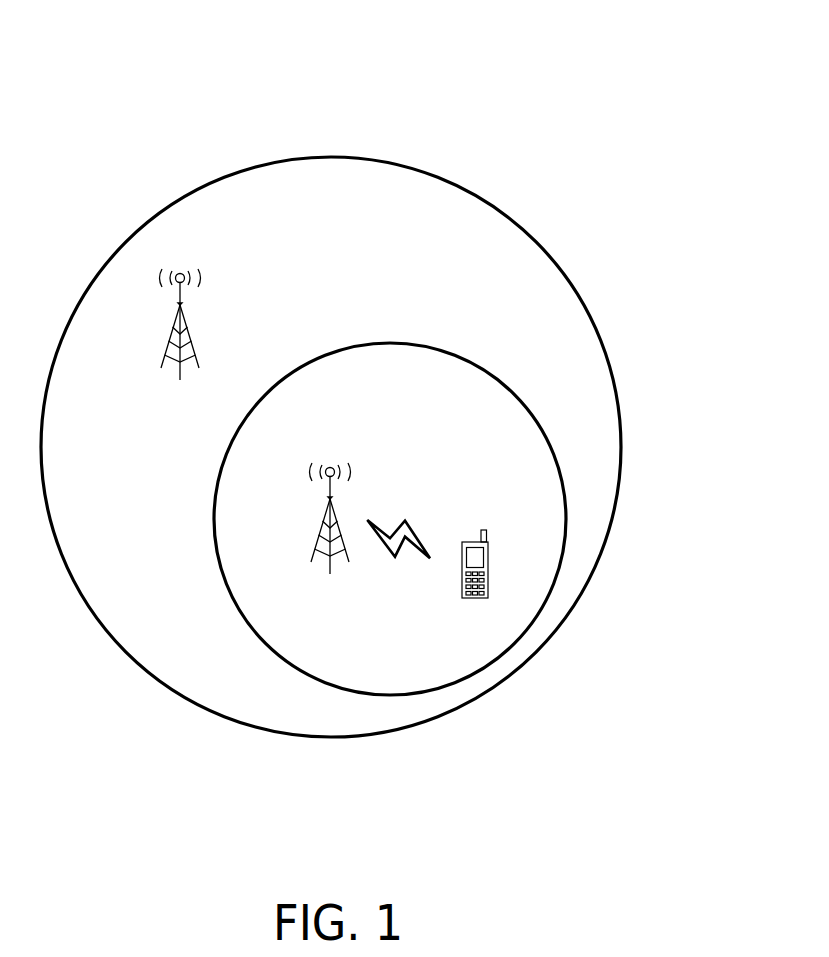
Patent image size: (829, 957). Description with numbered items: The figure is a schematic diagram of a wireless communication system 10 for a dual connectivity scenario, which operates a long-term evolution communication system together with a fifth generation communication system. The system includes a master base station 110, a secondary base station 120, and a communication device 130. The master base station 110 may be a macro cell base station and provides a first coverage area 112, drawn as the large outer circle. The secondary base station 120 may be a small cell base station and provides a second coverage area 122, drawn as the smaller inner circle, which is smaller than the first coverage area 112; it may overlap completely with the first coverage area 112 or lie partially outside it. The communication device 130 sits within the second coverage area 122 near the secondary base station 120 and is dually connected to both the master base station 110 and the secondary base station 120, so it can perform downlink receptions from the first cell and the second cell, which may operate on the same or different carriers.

The wireless communication system 10 is at (530, 115).
The master base station 110 is at (189, 331).
The first coverage area 112 is at (562, 270).
The secondary base station 120 is at (320, 528).
The second coverage area 122 is at (502, 382).
The communication device 130 is at (473, 542).